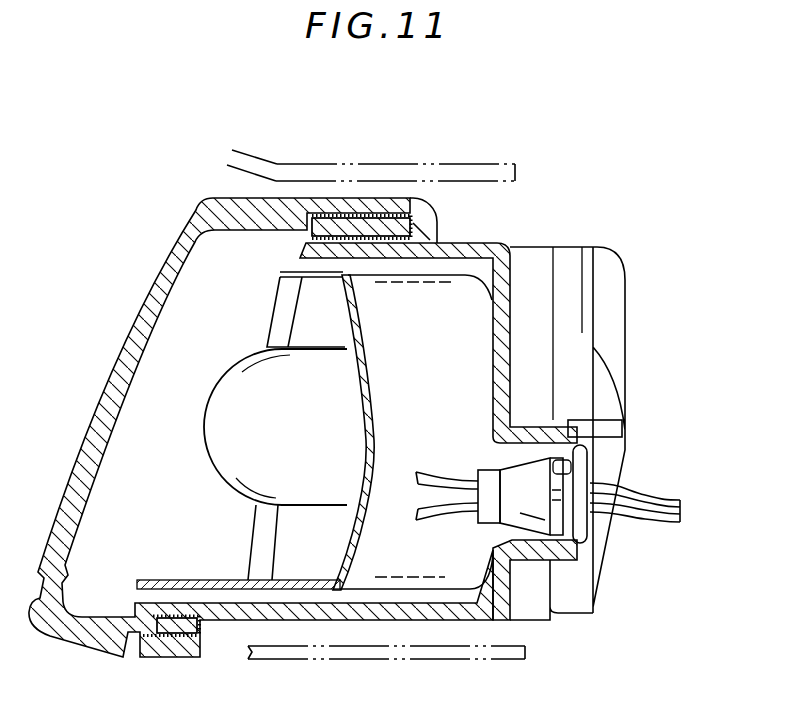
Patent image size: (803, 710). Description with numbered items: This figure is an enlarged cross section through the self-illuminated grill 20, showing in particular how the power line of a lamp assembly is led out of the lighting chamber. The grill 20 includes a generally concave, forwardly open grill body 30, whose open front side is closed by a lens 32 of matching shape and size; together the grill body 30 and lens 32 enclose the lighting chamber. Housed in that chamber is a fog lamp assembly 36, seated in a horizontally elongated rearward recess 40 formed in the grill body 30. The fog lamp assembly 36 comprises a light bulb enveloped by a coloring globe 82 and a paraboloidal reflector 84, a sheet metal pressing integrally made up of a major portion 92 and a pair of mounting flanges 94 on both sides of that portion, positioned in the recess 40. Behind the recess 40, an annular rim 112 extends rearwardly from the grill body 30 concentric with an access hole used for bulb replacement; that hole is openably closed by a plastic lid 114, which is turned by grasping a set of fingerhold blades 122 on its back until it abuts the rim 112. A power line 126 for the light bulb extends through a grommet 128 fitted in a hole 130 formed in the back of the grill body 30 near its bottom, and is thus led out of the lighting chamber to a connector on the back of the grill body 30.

The self-illuminated grill 20 is at (152, 160).
The grill body 30 is at (518, 276).
The lens 32 is at (152, 283).
The fog lamp assembly 36 is at (202, 477).
The rearward recess 40 is at (490, 293).
The coloring globe 82 is at (220, 402).
The paraboloidal reflector 84 is at (292, 262).
The major portion 92 is at (378, 410).
The mounting flange 94 is at (337, 330).
The annular rim 112 is at (567, 257).
The lid 114 is at (595, 323).
The fingerhold blade 122 is at (603, 425).
The power line 126 is at (665, 521).
The grommet 128 is at (583, 478).
The hole 130 is at (562, 474).